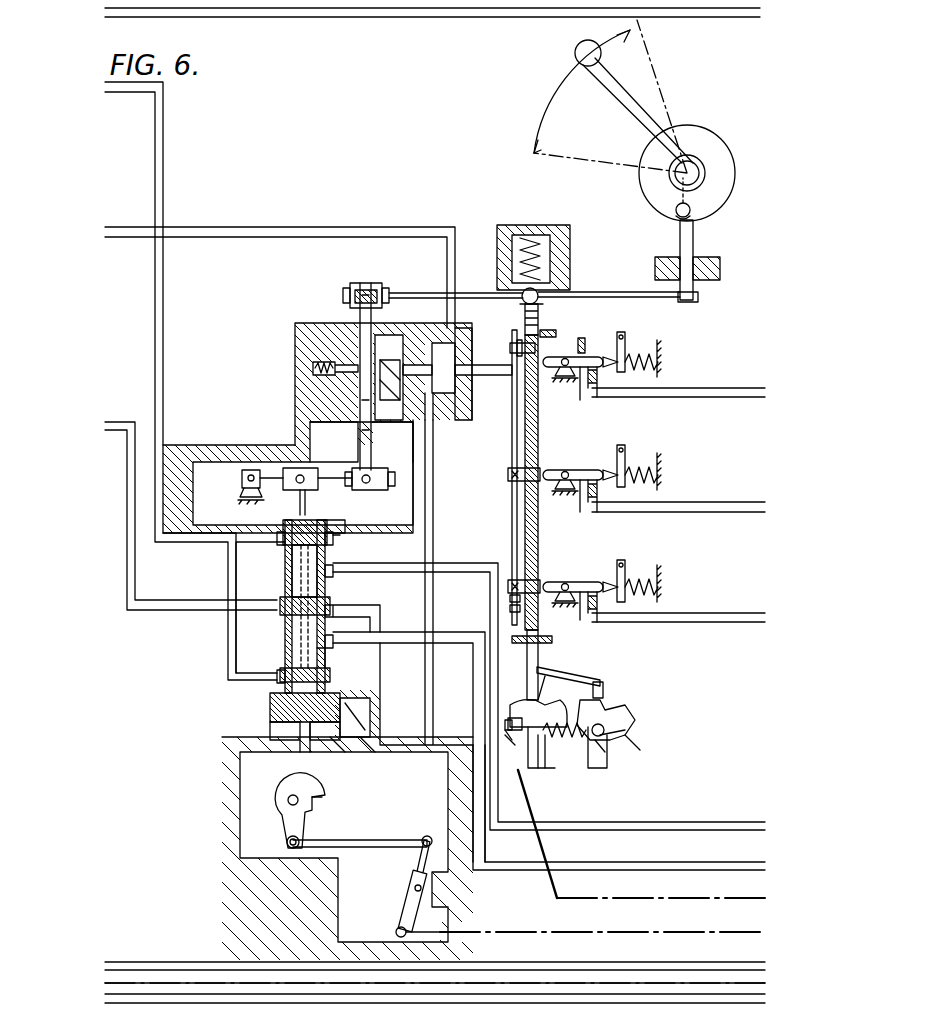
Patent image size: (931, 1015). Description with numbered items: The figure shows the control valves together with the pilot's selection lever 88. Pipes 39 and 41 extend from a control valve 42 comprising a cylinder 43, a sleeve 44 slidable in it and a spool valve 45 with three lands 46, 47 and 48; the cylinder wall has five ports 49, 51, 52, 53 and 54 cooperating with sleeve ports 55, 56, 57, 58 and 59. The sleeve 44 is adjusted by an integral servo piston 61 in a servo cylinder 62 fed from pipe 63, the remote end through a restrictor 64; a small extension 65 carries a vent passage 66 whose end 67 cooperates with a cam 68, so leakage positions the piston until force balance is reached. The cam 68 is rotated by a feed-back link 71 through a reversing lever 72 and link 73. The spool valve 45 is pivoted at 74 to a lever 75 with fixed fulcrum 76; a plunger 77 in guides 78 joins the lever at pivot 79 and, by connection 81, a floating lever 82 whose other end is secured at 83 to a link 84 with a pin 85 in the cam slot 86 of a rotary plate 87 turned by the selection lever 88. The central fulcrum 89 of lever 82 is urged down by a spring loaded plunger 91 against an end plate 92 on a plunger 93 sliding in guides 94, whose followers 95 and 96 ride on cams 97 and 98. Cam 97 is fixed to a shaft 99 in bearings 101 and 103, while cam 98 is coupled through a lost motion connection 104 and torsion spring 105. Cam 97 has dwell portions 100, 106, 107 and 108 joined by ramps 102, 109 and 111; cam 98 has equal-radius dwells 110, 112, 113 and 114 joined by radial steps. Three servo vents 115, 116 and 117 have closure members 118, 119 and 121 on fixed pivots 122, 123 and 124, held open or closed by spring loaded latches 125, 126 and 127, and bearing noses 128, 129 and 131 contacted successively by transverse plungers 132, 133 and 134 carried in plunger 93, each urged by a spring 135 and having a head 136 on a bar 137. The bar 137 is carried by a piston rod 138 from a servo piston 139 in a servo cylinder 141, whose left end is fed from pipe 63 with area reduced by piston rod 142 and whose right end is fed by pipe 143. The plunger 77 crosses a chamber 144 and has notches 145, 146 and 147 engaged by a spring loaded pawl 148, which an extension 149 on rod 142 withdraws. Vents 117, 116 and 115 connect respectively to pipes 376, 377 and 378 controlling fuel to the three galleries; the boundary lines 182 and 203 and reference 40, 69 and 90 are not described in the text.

The pipe 39 is at (725, 828).
The chamber 40 is at (222, 537).
The pipe 41 is at (480, 845).
The control valve 42 is at (262, 633).
The cylinder 43 is at (335, 533).
The sleeve 44 is at (283, 525).
The spool valve 45 is at (305, 508).
The land 46 is at (300, 676).
The land 47 is at (300, 606).
The land 48 is at (285, 562).
The port 49 is at (277, 678).
The port 51 is at (333, 642).
The port 52 is at (549, 696).
The port 53 is at (368, 547).
The port 54 is at (333, 538).
The port 55 is at (372, 700).
The port 56 is at (345, 668).
The port 57 is at (333, 612).
The port 58 is at (333, 572).
The port 59 is at (277, 540).
The servo piston 61 is at (270, 712).
The servo cylinder 62 is at (347, 848).
The pipe 63 is at (135, 422).
The restrictor 64 is at (363, 758).
The extension 65 is at (331, 749).
The vent passage 66 is at (289, 749).
The end of projection 67 is at (285, 782).
The cam 68 is at (320, 797).
The pivot 69 is at (288, 840).
The feed-back link 71 is at (545, 931).
The reversing lever 72 is at (410, 878).
The link 73 is at (385, 846).
The pivotal connection 74 is at (310, 484).
The lever 75 is at (362, 486).
The fixed fulcrum 76 is at (242, 479).
The plunger 77 is at (388, 377).
The guides 78 is at (358, 330).
The pivot 79 is at (372, 476).
The pivotal connection 81 is at (362, 284).
The floating lever 82 is at (418, 293).
The pivotal connection 83 is at (698, 300).
The link 84 is at (693, 239).
The pin 85 is at (664, 227).
The cam slot 86 is at (703, 195).
The rotary plate 87 is at (712, 140).
The pilot's selection lever 88 is at (620, 95).
The central fulcrum 89 is at (540, 293).
The joint 90 is at (525, 315).
The spring loaded plunger 91 is at (550, 262).
The end plate 92 is at (538, 318).
The plunger 93 is at (525, 518).
The guides 94 is at (565, 640).
The cam follower 95 is at (528, 694).
The cam follower 96 is at (625, 730).
The cam 97 is at (527, 834).
The cam 98 is at (635, 745).
The shaft 99 is at (508, 722).
The dwell portion 100 is at (535, 768).
The bearing 101 is at (600, 770).
The ramp 102 is at (510, 733).
The bearing 103 is at (548, 775).
The pin and slot lost motion connection 104 is at (572, 765).
The torsion spring 105 is at (573, 690).
The dwell portion 106 is at (510, 728).
The dwell portion 107 is at (512, 705).
The dwell portion 108 is at (600, 690).
The ramp 109 is at (508, 722).
The dwell portion 110 is at (603, 748).
The ramp 111 is at (545, 678).
The dwell portion 112 is at (560, 740).
The dwell portion 113 is at (618, 706).
The dwell portion 114 is at (628, 722).
The servo vent 115 is at (600, 618).
The servo vent 116 is at (600, 506).
The servo vent 117 is at (600, 392).
The closure member 118 is at (573, 605).
The closure member 119 is at (585, 512).
The closure member 121 is at (600, 357).
The fixed pivot 122 is at (578, 580).
The fixed pivot 123 is at (578, 468).
The fixed pivot 124 is at (573, 389).
The spring loaded latch 125 is at (626, 570).
The spring loaded latch 126 is at (626, 457).
The spring loaded latch 127 is at (626, 340).
The nose 128 is at (528, 577).
The nose 129 is at (539, 464).
The nose 131 is at (558, 369).
The transverse plunger 132 is at (512, 608).
The transverse plunger 133 is at (545, 482).
The transverse plunger 134 is at (503, 351).
The spring 135 is at (485, 640).
The head 136 is at (512, 598).
The bar 137 is at (512, 345).
The piston rod 138 is at (482, 375).
The servo piston 139 is at (440, 343).
The servo cylinder 141 is at (403, 342).
The piston rod 142 is at (376, 281).
The pipe 143 is at (455, 245).
The chamber 144 is at (433, 418).
The notch 145 is at (335, 442).
The notch 146 is at (391, 442).
The notch 147 is at (352, 345).
The spring loaded pawl 148 is at (313, 370).
The extension 149 is at (458, 398).
The conduit 182 is at (285, 17).
The axis line 203 is at (155, 975).
The pipe 376 is at (715, 397).
The pipe 377 is at (717, 512).
The pipe 378 is at (715, 622).